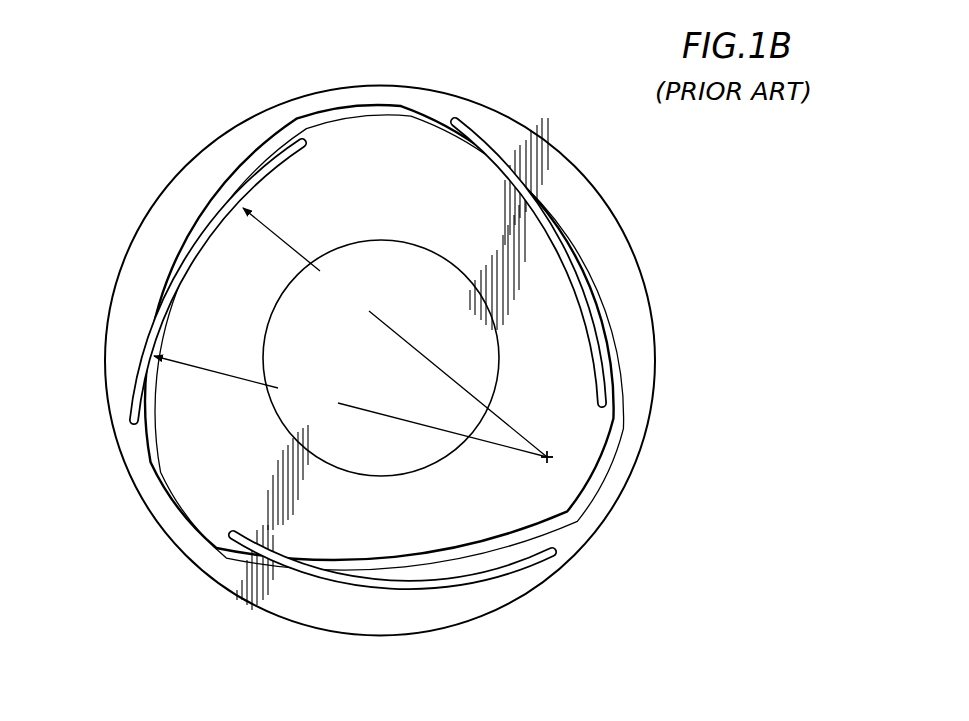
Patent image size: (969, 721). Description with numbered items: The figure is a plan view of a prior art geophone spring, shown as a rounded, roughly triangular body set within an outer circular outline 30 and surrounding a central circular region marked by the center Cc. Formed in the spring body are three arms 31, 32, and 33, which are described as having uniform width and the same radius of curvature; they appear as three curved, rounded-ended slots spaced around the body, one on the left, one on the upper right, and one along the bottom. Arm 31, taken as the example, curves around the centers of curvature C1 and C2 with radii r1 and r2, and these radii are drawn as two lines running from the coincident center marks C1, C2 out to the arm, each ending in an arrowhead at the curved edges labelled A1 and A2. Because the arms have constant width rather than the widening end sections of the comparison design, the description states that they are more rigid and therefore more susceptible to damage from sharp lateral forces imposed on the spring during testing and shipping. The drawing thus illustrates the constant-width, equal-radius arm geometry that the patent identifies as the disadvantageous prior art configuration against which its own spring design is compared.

The stator / outer circle 30 is at (634, 226).
The arm 31 is at (162, 327).
The arm 32 is at (493, 166).
The arm 33 is at (330, 573).
The outer contour arc of rotor A1 is at (197, 211).
The displaced contour arc A2 is at (179, 289).
The radius r1 is at (350, 406).
The radius r2 is at (395, 332).
The center of curvature C1 is at (558, 444).
The center of curvature C2 is at (539, 475).
The rotor center Cc is at (389, 358).